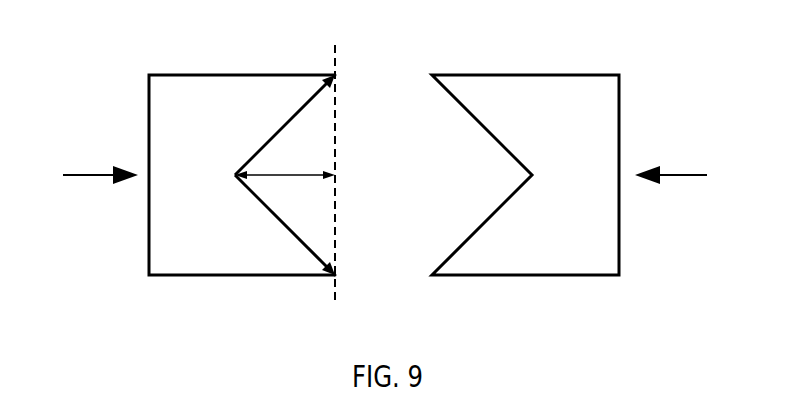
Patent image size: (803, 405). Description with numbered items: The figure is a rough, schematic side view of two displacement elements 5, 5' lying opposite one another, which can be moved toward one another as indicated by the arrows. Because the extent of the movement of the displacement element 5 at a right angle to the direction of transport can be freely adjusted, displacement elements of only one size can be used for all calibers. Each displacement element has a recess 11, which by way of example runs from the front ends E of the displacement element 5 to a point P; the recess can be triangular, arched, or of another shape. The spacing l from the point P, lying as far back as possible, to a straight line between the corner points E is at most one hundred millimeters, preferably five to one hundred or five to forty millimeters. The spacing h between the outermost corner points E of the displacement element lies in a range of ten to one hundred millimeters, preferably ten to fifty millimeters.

The displacement element 5 is at (242, 154).
The displacement element 5' is at (525, 154).
The recess 11 is at (318, 121).
The front ends E is at (337, 75).
The point P is at (233, 178).
The spacing l is at (285, 162).
The spacing h is at (344, 222).